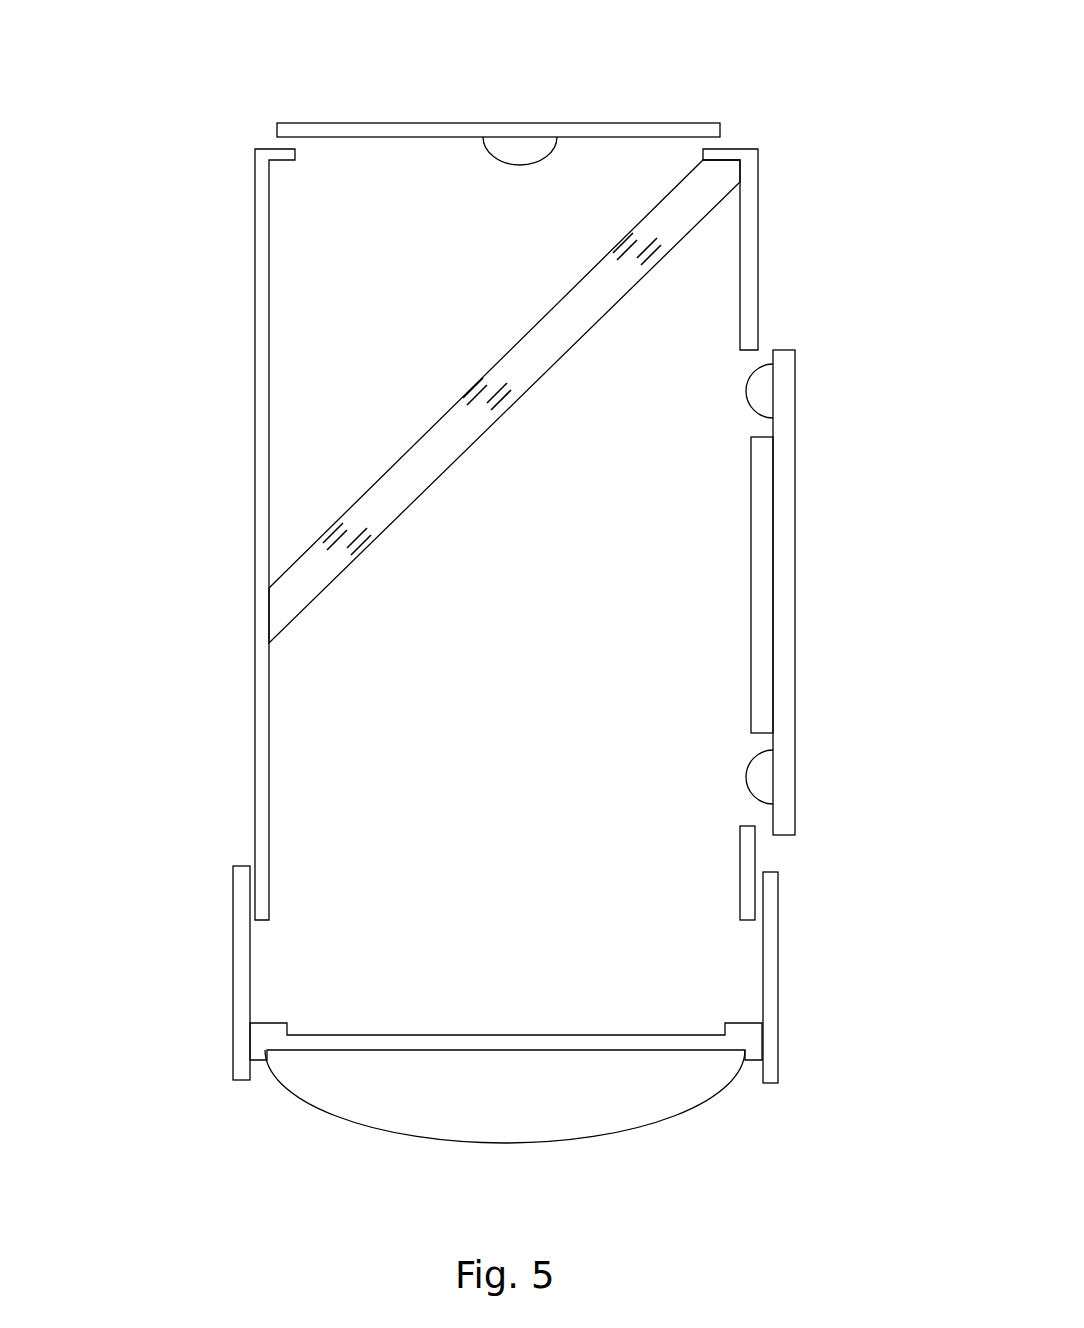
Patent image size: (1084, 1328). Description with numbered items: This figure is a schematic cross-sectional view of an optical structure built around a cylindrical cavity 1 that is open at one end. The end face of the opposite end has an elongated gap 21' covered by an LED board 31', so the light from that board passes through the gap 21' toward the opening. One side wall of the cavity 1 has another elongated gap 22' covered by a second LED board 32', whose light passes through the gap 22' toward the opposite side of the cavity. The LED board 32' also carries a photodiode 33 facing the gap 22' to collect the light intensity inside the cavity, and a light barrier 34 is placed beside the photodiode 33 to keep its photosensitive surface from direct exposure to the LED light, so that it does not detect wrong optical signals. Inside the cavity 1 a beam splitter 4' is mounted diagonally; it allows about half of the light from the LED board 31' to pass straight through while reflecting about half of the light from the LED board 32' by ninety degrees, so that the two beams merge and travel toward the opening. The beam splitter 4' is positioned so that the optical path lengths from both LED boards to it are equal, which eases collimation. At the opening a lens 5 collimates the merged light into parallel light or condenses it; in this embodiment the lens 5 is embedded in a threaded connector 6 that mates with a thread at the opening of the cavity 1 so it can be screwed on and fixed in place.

The cavity 1 is at (757, 150).
The gap 21' is at (348, 534).
The gap 22' is at (652, 825).
The LED board 31' is at (498, 91).
The LED board 32' is at (852, 592).
The photodiode 33 is at (740, 772).
The light barrier 34 is at (768, 592).
The beam splitter 4' is at (504, 401).
The lens 5 is at (543, 1142).
The threaded connector 6 is at (233, 970).